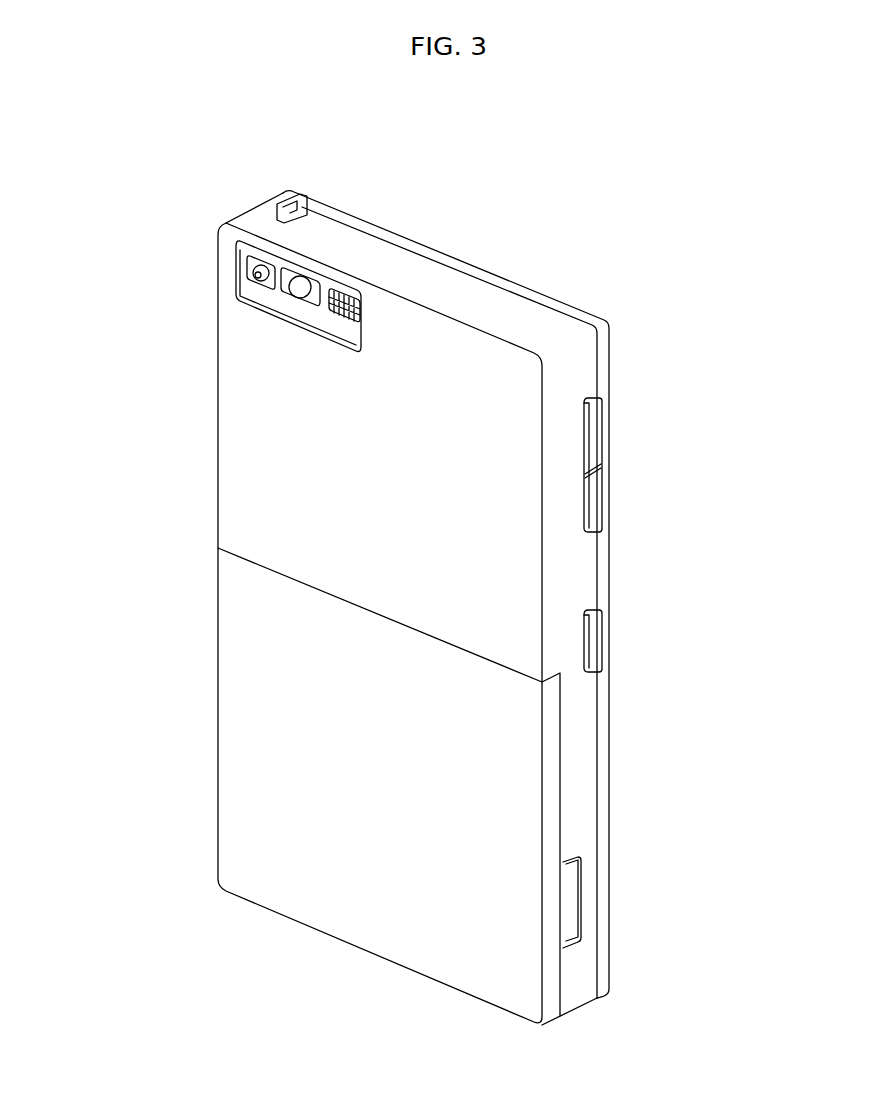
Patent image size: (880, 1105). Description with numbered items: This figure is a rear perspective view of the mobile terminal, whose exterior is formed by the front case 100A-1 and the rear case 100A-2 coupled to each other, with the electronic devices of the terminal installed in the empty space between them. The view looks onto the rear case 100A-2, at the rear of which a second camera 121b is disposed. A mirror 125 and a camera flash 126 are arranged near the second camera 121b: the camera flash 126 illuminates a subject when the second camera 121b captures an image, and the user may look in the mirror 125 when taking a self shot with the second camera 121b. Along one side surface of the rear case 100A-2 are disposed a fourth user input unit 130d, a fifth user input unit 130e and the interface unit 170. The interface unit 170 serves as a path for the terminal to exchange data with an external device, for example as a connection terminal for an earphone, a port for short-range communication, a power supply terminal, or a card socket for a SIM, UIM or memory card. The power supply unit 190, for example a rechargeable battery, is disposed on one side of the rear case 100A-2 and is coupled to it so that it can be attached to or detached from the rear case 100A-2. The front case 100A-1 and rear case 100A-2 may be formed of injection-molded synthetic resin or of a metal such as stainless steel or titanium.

The front case 100A-1 is at (310, 198).
The rear case 100A-2 is at (253, 222).
The second camera 121b is at (297, 283).
The mirror 125 is at (252, 271).
The camera flash 126 is at (347, 300).
The fourth user input unit 130d is at (594, 434).
The fifth user input unit 130e is at (592, 634).
The interface unit 170 is at (572, 913).
The power supply unit 190 is at (248, 717).